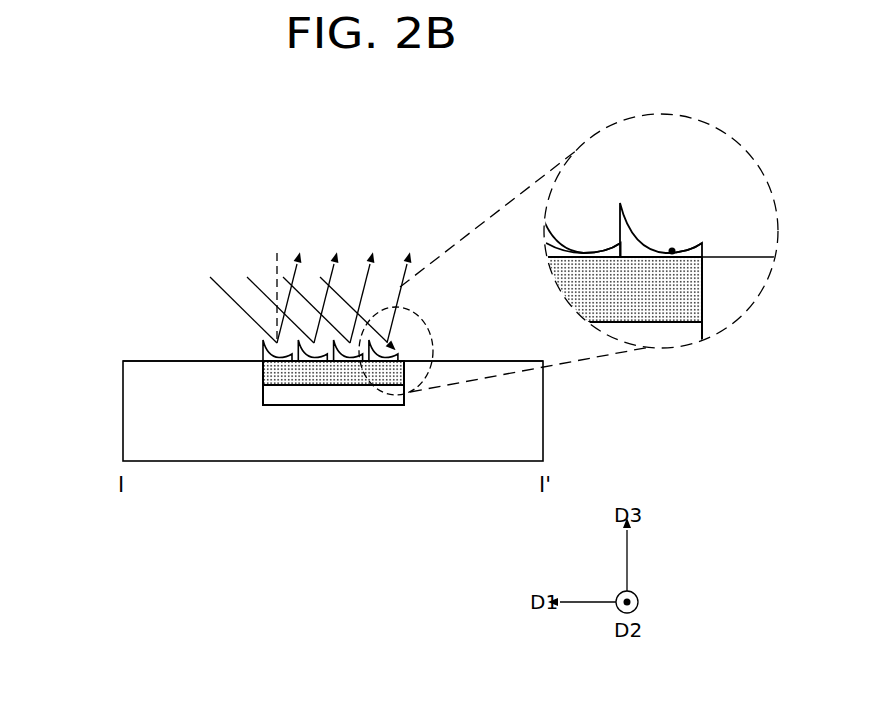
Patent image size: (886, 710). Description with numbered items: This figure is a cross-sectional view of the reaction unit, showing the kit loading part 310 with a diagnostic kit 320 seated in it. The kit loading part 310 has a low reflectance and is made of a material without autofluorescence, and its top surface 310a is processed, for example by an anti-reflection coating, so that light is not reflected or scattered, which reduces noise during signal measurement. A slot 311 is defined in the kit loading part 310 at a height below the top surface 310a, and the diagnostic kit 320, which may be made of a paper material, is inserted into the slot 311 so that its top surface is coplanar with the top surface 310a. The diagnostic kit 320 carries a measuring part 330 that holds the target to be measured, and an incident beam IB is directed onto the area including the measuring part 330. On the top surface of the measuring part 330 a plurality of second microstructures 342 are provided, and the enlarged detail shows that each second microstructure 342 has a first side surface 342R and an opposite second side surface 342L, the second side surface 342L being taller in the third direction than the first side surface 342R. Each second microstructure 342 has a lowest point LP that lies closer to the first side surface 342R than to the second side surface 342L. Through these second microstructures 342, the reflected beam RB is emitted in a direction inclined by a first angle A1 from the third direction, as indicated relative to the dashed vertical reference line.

The kit loading part 310 is at (466, 447).
The top surface of the kit loading part 310a is at (153, 361).
The slot 311 is at (291, 407).
The diagnostic kit 320 is at (366, 411).
The measuring part 330 is at (322, 372).
The second microstructure 342 is at (388, 350).
The second side surface 342L is at (604, 241).
The first side surface 342R is at (709, 246).
The lowest point LP is at (673, 249).
The incident beam IB is at (373, 303).
The reflected beam RB is at (368, 325).
The first angle A1 is at (278, 320).